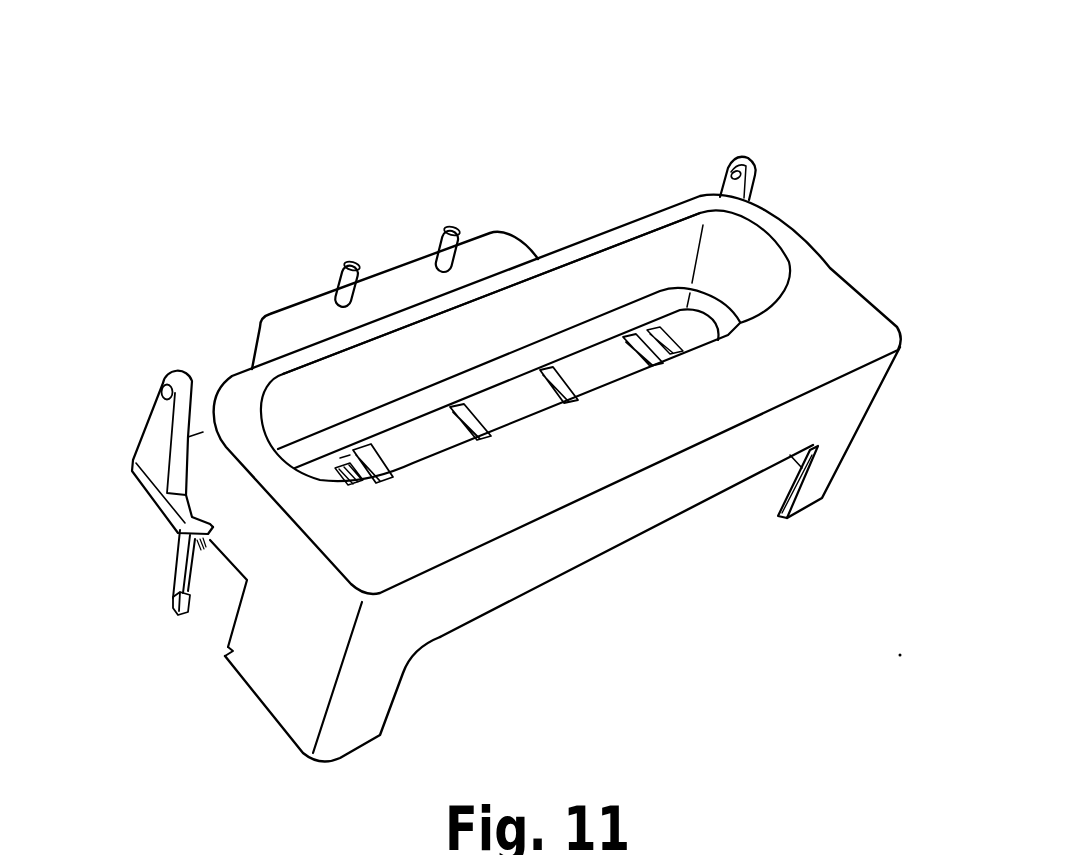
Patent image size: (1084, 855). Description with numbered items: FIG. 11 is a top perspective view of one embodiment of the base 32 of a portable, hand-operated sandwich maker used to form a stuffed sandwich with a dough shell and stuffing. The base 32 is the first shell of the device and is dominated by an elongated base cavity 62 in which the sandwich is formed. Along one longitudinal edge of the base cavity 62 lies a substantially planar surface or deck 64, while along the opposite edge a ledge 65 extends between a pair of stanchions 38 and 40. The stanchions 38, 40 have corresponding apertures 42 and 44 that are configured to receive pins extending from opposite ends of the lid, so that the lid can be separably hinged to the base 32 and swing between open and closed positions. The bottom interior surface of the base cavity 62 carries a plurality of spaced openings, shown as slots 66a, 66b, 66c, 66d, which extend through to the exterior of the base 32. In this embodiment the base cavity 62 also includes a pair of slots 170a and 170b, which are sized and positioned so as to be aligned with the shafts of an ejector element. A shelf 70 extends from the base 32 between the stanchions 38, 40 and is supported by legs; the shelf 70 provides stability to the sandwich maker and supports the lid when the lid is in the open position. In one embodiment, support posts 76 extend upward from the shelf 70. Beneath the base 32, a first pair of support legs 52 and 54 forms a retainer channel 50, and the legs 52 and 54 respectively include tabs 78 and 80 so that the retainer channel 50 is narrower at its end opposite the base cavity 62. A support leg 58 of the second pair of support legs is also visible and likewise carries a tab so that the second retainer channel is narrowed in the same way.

The base 32 is at (825, 88).
The stanchion 38 is at (143, 450).
The stanchion 40 is at (722, 188).
The aperture 42 is at (160, 392).
The aperture 44 is at (733, 160).
The retainer channel 50 is at (213, 595).
The support leg 52 is at (258, 673).
The support leg 54 is at (176, 574).
The support leg 58 is at (825, 473).
The base cavity 62 is at (750, 260).
The deck 64 is at (873, 313).
The ledge 65 is at (595, 240).
The slot 66a is at (373, 444).
The slot 66b is at (488, 432).
The slot 66c is at (578, 397).
The slot 66d is at (653, 332).
The shelf 70 is at (395, 280).
The support post 76 is at (343, 272).
The tab 78 is at (222, 656).
The tab 80 is at (175, 611).
The slot 170a is at (347, 466).
The slot 170b is at (667, 333).